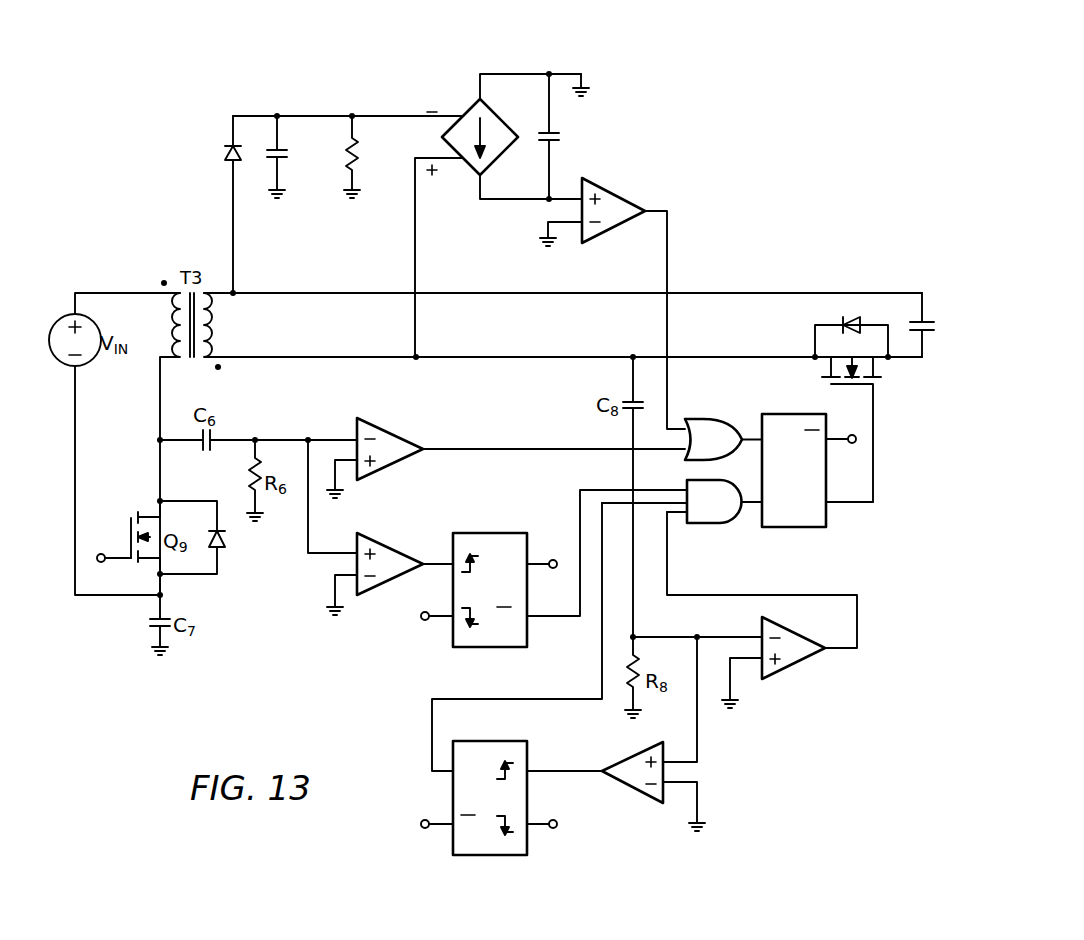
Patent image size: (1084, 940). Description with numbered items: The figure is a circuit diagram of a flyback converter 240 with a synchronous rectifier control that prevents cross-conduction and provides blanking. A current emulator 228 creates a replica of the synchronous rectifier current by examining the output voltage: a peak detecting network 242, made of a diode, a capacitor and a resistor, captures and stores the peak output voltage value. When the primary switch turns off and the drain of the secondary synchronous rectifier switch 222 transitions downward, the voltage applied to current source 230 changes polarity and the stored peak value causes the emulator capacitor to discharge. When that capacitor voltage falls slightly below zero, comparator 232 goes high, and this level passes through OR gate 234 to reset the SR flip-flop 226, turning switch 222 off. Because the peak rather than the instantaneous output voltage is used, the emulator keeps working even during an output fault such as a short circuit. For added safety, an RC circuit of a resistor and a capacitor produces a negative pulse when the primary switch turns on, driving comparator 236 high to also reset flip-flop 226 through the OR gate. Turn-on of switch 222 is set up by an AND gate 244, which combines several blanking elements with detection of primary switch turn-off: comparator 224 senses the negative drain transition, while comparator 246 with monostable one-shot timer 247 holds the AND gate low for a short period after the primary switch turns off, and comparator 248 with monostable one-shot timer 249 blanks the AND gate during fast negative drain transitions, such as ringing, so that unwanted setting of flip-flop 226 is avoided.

The synchronous rectifier switch 222 is at (792, 337).
The comparator 224 is at (796, 671).
The SR flip-flop 226 is at (790, 530).
The current emulator 228 is at (612, 120).
The current source 230 is at (475, 106).
The comparator 232 is at (612, 193).
The OR gate 234 is at (719, 419).
The comparator 236 is at (386, 434).
The flyback converter 240 is at (301, 57).
The peak detecting network 242 is at (206, 133).
The AND gate 244 is at (712, 526).
The comparator 246 is at (386, 549).
The monostable one-shot timer 247 is at (490, 532).
The comparator 248 is at (623, 789).
The monostable one-shot timer 249 is at (487, 858).